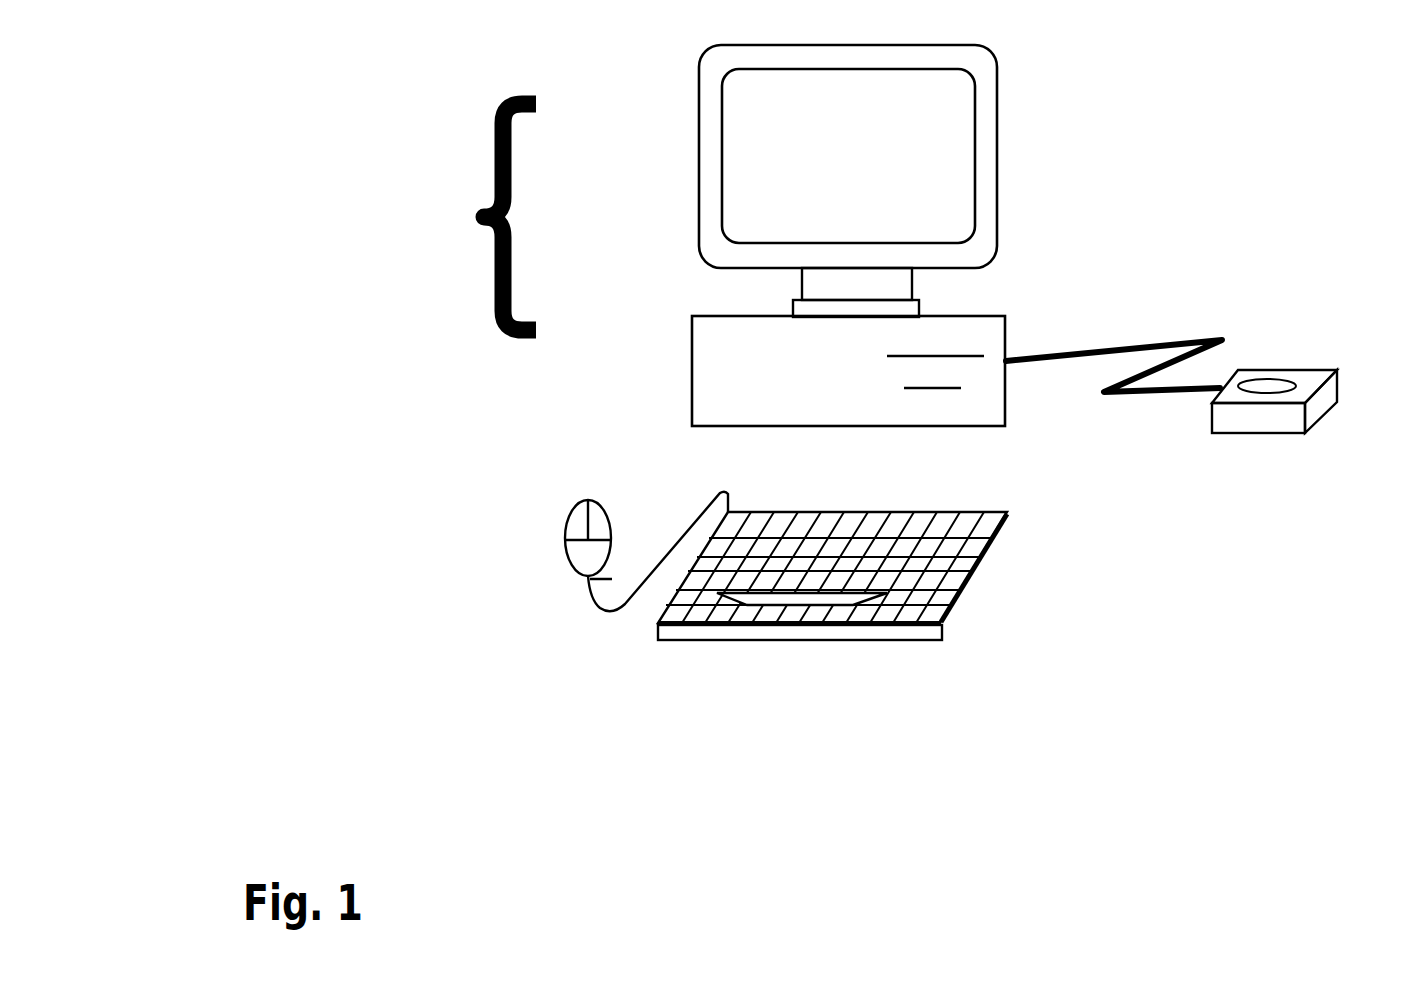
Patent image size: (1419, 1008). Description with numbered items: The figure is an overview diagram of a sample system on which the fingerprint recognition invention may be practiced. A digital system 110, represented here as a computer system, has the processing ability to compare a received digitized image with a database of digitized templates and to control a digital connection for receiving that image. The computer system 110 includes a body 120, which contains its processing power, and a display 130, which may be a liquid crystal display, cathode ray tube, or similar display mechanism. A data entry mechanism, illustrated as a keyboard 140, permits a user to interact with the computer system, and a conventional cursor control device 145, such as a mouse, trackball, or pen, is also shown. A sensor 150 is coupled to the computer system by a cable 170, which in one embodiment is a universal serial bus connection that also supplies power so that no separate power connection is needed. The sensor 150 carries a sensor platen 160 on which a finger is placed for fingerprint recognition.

The digital system 110 is at (479, 217).
The body 120 is at (692, 347).
The display 130 is at (698, 222).
The keyboard 140 is at (977, 570).
The cursor control device 145 is at (587, 501).
The sensor 150 is at (1263, 432).
The sensor platen 160 is at (1267, 383).
The cable 170 is at (1135, 340).